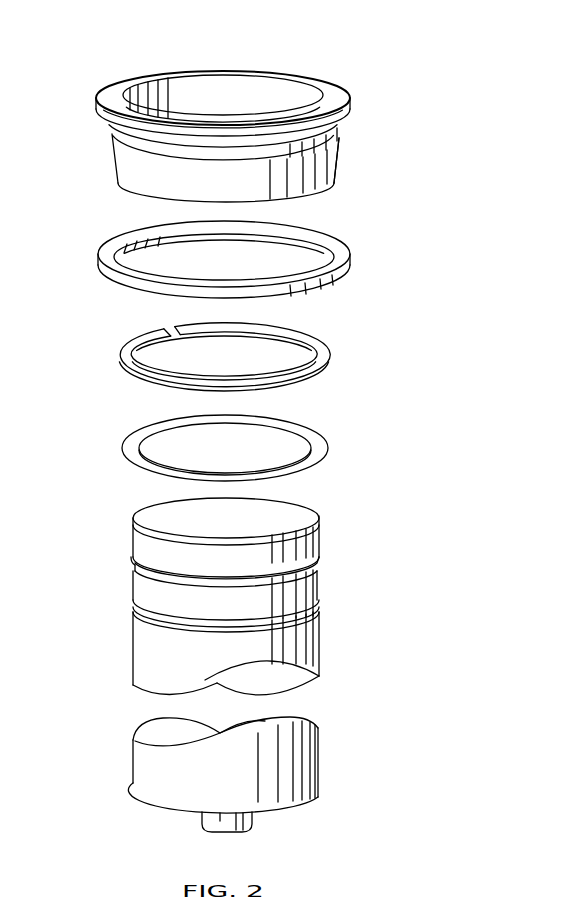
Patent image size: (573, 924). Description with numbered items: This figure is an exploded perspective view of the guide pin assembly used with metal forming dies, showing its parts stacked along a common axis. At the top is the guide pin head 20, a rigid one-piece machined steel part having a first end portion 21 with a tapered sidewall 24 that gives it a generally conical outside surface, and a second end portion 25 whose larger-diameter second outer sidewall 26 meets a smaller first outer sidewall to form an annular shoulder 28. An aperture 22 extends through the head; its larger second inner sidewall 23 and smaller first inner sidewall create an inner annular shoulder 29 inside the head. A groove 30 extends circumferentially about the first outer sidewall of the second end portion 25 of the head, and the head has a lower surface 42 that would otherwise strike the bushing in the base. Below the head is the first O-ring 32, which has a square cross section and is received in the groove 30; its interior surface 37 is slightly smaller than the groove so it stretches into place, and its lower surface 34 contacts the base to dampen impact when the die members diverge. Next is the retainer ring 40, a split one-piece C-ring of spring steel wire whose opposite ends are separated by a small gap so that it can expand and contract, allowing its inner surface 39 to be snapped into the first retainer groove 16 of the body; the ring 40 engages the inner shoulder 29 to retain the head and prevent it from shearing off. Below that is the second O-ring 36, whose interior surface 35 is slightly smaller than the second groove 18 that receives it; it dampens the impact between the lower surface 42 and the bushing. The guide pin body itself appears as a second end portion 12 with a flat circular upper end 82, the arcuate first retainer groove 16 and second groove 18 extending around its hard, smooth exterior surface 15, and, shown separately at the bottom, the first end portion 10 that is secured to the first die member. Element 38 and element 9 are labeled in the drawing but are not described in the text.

The guide pin head 20 is at (257, 49).
The first end portion 21 is at (337, 182).
The aperture 22 is at (295, 95).
The second inner sidewall 23 is at (156, 95).
The tapered sidewall 24 is at (335, 160).
The second end portion 25 is at (352, 98).
The second outer sidewall 26 is at (99, 103).
The annular shoulder 28 is at (103, 123).
The inner annular shoulder 29 is at (205, 120).
The groove 30 is at (340, 137).
The lower surface 42 is at (128, 192).
The first O-ring 32 is at (96, 268).
The lower surface 34 is at (342, 288).
The interior surface 37 is at (322, 244).
The retainer ring 40 is at (118, 362).
The outer surface of split ring 38 is at (330, 356).
The inner surface 39 is at (208, 376).
The second O-ring 36 is at (332, 442).
The interior surface 35 is at (242, 428).
The second end portion 12 is at (320, 537).
The upper end 82 is at (298, 518).
The first retainer groove 16 is at (313, 565).
The second groove 18 is at (312, 608).
The exterior surface 15 is at (320, 653).
The helical cut portion 9 is at (137, 668).
The first end portion 10 is at (320, 761).